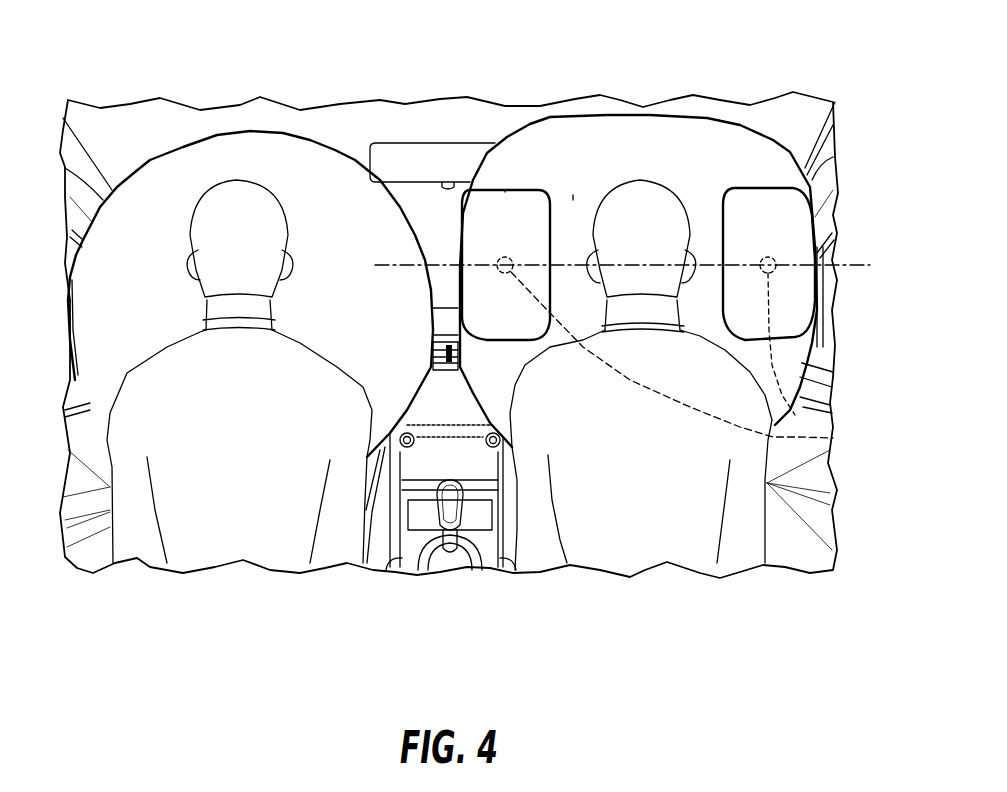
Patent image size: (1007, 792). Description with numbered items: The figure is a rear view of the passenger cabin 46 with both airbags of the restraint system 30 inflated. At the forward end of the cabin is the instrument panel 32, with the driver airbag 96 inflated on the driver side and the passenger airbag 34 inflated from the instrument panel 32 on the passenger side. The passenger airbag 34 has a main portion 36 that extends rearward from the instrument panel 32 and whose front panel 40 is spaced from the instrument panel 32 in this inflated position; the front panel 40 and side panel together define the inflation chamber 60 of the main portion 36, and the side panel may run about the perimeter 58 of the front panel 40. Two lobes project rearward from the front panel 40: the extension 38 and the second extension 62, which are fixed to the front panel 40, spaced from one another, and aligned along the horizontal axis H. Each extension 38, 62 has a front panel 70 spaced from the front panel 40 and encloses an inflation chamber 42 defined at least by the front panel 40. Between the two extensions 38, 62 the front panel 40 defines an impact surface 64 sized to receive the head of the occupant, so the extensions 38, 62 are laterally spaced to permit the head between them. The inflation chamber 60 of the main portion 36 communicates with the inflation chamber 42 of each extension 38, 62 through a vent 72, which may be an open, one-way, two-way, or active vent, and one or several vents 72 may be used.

The restraint system 30 is at (842, 250).
The instrument panel 32 is at (385, 495).
The passenger airbag 34 is at (780, 135).
The main portion 36 is at (810, 175).
The extension 38 is at (505, 190).
The front panel 40 is at (616, 237).
The inflation chamber 42 is at (523, 220).
The passenger cabin 46 is at (838, 467).
The perimeter 58 is at (807, 402).
The inflation chamber 60 is at (705, 138).
The second extension 62 is at (810, 365).
The impact surface 64 is at (573, 195).
The front panel 70 is at (517, 335).
The vent 72 is at (833, 438).
The driver airbag 96 is at (100, 190).
The horizontal axis H is at (850, 267).